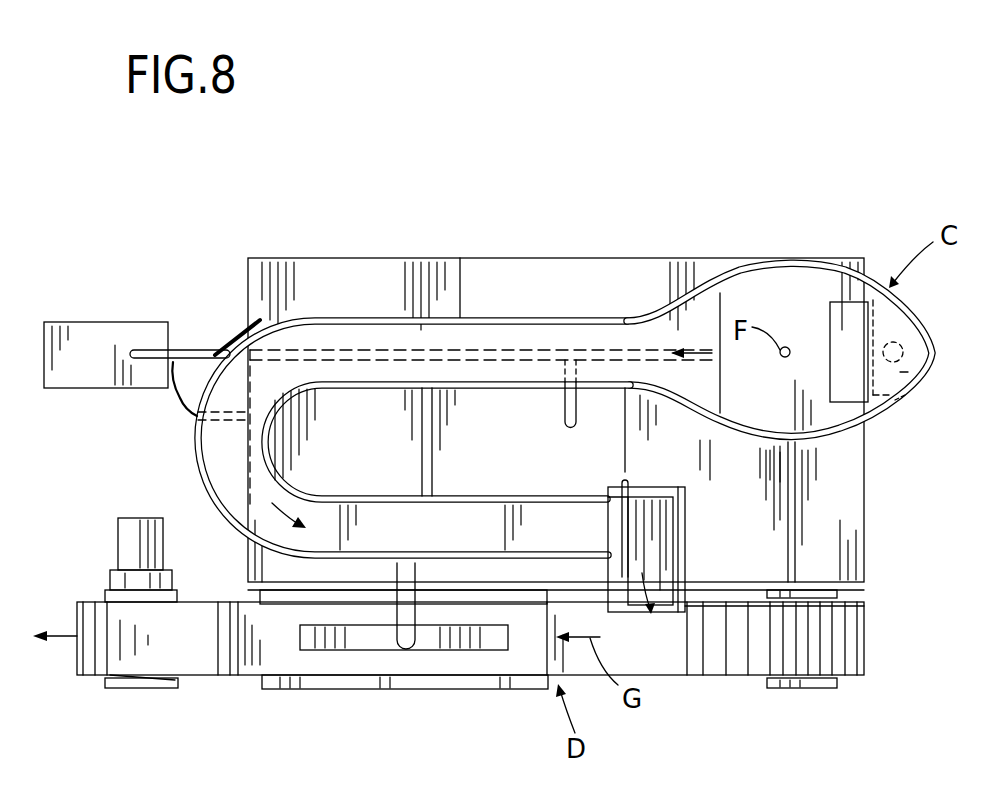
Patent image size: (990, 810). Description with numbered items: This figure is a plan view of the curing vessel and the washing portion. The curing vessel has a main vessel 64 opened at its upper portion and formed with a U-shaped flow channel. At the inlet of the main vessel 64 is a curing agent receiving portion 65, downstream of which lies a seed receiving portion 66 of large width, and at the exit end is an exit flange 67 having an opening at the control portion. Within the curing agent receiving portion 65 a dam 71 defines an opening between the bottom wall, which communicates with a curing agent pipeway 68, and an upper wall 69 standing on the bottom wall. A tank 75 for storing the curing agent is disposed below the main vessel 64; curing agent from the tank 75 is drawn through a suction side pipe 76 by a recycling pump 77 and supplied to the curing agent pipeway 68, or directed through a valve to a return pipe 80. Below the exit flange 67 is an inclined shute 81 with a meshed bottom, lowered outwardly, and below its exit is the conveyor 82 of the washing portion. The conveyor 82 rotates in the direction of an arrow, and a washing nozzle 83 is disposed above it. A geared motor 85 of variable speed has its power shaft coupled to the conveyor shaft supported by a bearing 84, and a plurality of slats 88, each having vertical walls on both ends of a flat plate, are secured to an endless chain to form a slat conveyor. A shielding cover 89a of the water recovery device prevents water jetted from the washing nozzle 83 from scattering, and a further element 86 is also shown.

The main vessel 64 is at (460, 262).
The curing agent receiving portion 65 is at (902, 310).
The seed receiving portion 66 is at (787, 292).
The exit flange 67 is at (630, 480).
The curing agent pipeway 68 is at (630, 348).
The upper wall 69 is at (907, 375).
The dam 71 is at (900, 408).
The tank 75 is at (305, 257).
The suction side pipe 76 is at (170, 393).
The recycling pump 77 is at (110, 322).
The return pipe 80 is at (567, 403).
The inclined shute 81 is at (663, 530).
The conveyor 82 is at (228, 684).
The washing nozzle 83 is at (333, 643).
The bearing 84 is at (105, 595).
The geared motor 85 is at (120, 541).
The washer 86 is at (820, 583).
The slats 88 is at (740, 667).
The shielding cover 89a is at (467, 597).